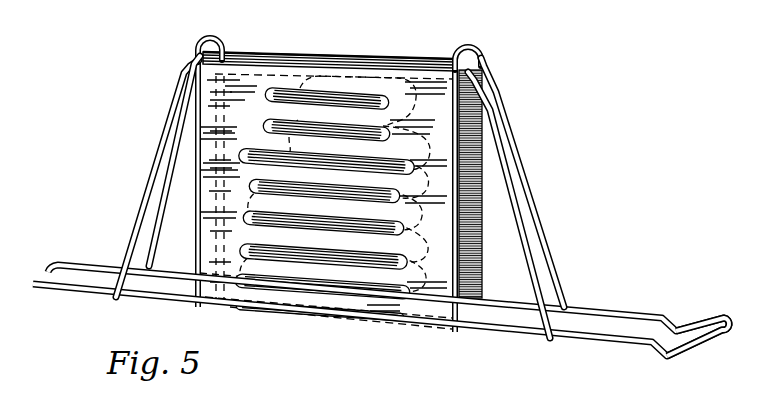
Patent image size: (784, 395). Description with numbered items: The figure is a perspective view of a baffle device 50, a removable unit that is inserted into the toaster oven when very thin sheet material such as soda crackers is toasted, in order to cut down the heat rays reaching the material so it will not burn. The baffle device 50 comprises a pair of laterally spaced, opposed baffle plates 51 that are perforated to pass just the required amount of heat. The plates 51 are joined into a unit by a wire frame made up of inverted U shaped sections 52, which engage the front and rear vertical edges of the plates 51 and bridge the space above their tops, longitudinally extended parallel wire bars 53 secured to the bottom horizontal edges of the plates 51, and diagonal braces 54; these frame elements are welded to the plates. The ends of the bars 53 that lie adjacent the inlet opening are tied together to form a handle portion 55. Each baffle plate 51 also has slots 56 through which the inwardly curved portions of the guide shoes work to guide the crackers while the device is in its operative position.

The baffle device 50 is at (522, 132).
The baffle plate 51 is at (473, 270).
The inverted U shaped section 52 is at (199, 44).
The wire bar 53 is at (613, 310).
The diagonal brace 54 is at (165, 197).
The handle portion 55 is at (716, 336).
The slot 56 is at (266, 166).